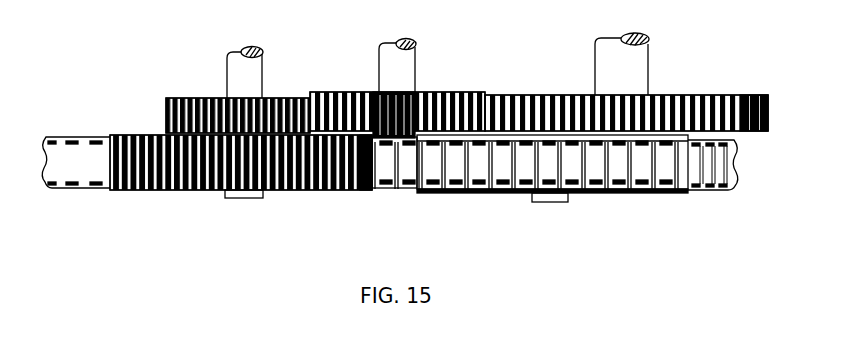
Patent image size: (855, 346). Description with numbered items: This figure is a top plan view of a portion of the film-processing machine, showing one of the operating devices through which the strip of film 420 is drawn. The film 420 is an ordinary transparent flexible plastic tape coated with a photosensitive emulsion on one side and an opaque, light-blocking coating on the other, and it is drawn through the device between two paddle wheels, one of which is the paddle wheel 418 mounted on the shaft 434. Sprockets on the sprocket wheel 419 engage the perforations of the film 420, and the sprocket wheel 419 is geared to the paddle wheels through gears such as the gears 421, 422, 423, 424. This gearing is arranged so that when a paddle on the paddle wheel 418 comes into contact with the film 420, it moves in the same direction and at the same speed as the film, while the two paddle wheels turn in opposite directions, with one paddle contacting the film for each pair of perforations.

The paddle wheel 418 is at (233, 198).
The sprocket wheel 419 is at (618, 190).
The strip of film 420 is at (90, 165).
The gear 421 is at (543, 202).
The gear 422 is at (675, 108).
The gear 423 is at (442, 92).
The gear 424 is at (285, 112).
The shaft 434 is at (240, 68).